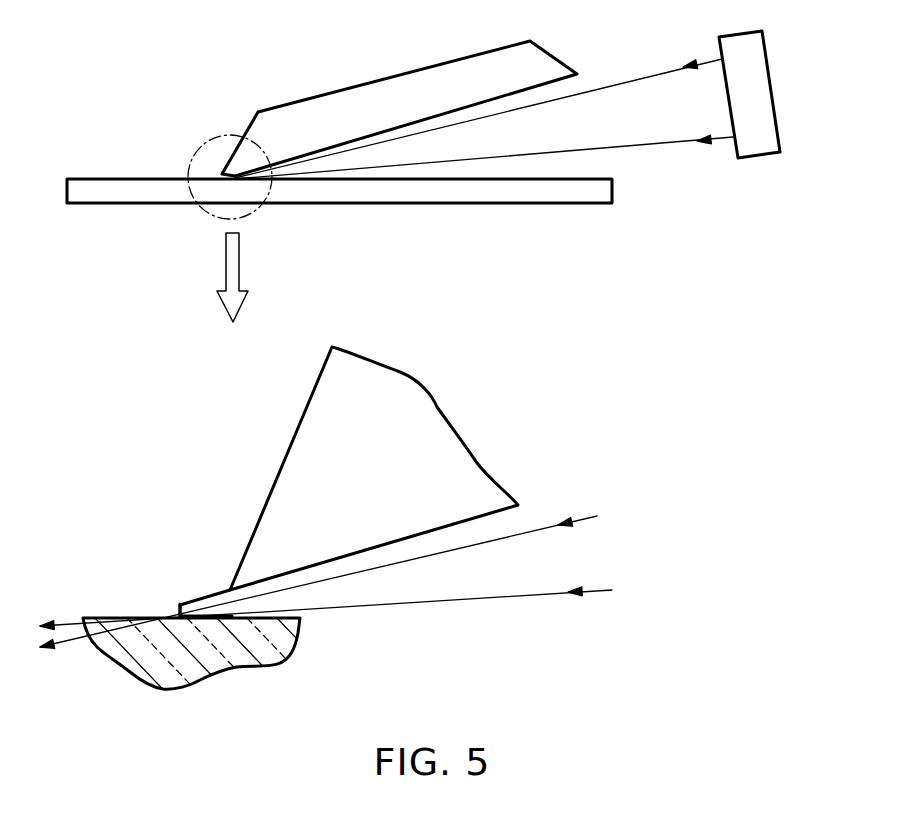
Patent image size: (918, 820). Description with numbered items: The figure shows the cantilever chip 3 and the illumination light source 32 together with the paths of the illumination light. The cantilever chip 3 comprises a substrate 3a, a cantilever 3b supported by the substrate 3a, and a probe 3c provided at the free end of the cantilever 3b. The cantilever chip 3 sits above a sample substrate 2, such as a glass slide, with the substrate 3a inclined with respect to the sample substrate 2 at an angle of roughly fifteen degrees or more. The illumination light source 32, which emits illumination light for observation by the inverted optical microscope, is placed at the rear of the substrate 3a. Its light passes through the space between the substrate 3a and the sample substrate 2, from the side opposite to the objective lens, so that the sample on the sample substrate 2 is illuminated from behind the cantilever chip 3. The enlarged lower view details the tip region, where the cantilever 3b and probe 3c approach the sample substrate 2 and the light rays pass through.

The sample substrate 2 is at (541, 204).
The cantilever chip 3 is at (492, 47).
The illumination light source 32 is at (774, 80).
The substrate 3a is at (295, 452).
The cantilever 3b is at (203, 597).
The probe 3c is at (178, 610).